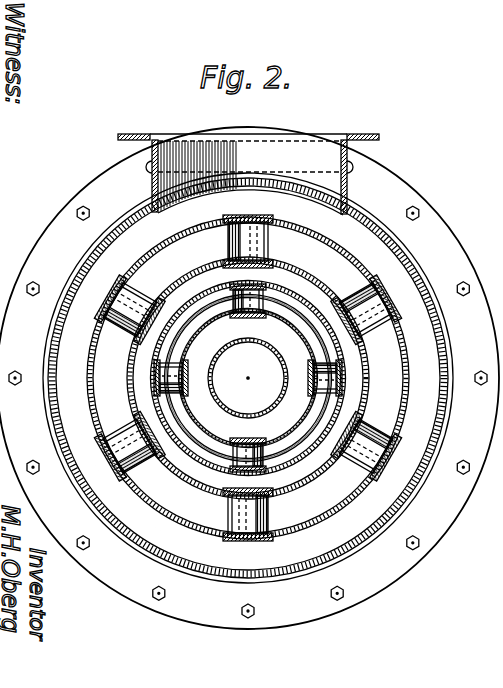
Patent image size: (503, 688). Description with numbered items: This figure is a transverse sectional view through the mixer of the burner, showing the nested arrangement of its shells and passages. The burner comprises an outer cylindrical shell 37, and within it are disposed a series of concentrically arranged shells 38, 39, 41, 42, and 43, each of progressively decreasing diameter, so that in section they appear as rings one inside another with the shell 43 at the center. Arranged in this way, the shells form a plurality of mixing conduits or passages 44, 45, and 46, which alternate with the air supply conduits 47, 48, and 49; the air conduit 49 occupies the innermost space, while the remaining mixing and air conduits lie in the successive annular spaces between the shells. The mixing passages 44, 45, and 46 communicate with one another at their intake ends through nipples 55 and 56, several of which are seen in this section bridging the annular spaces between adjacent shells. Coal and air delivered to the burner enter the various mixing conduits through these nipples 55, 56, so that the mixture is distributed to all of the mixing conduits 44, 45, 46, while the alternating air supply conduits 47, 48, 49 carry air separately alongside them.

The outer cylindrical shell 37 is at (80, 273).
The concentric shell 38 is at (340, 504).
The concentric shell 39 is at (317, 476).
The concentric shell 41 is at (299, 440).
The concentric shell 42 is at (293, 423).
The concentric shell 43 is at (273, 400).
The mixing conduit 44 is at (188, 546).
The mixing conduit 45 is at (248, 378).
The mixing conduit 46 is at (248, 378).
The air supply conduit 47 is at (248, 378).
The air supply conduit 48 is at (248, 378).
The air supply conduit 49 is at (246, 376).
The nipple 55 is at (272, 249).
The nipple 56 is at (280, 290).